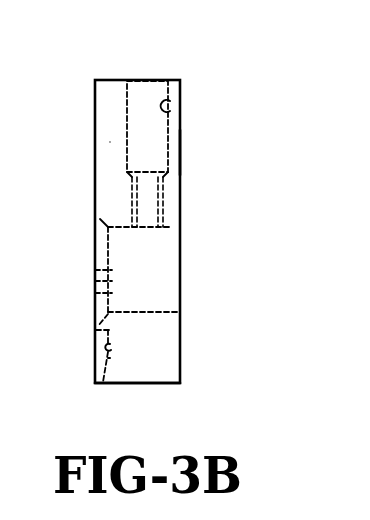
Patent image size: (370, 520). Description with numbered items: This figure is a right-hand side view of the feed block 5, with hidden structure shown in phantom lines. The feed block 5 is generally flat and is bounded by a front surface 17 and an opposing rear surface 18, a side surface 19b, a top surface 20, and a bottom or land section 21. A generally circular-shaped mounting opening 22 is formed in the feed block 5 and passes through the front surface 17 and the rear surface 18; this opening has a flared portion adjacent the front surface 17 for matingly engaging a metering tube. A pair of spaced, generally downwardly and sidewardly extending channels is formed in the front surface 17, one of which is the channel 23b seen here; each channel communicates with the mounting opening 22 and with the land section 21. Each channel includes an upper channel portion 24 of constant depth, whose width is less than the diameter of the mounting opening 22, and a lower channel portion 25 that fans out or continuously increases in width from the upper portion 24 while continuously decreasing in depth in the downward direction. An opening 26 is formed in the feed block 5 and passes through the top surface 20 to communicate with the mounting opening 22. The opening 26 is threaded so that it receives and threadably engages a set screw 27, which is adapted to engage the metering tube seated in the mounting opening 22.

The feed block 5 is at (133, 79).
The front surface 17 is at (95, 196).
The rear surface 18 is at (180, 162).
The side surface 19b is at (110, 142).
The top surface 20 is at (166, 80).
The land section 21 is at (130, 384).
The mounting opening 22 is at (173, 232).
The channel 23b is at (112, 350).
The upper channel portion 24 is at (112, 316).
The lower channel portion 25 is at (110, 359).
The opening 26 is at (172, 108).
The set screw 27 is at (150, 204).